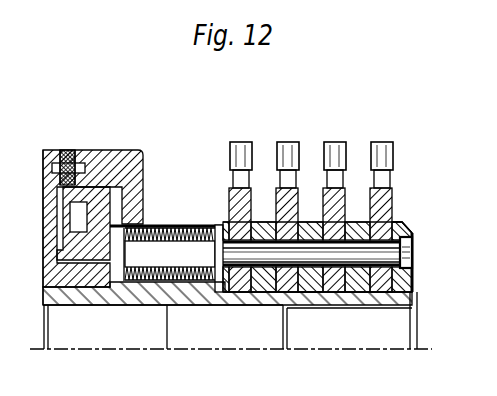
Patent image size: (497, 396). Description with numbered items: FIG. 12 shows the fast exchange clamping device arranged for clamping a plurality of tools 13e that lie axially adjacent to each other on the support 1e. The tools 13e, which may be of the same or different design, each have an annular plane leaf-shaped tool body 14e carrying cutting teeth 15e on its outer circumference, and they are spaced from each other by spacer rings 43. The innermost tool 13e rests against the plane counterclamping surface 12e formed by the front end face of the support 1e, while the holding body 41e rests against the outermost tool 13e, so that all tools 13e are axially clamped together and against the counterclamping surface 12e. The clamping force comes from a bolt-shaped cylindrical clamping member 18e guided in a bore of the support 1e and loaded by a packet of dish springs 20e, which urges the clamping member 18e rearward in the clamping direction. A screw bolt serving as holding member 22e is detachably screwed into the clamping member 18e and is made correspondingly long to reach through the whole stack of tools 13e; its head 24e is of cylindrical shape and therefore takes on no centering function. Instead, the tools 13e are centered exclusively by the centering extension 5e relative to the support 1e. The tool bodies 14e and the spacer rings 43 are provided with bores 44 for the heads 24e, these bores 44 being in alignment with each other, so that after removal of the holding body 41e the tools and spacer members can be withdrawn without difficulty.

The support 1e is at (165, 128).
The centering extension 5e is at (405, 297).
The counterclamping surface 12e is at (233, 220).
The tools 13e is at (375, 135).
The tool body 14e is at (385, 207).
The cutting teeth 15e is at (288, 142).
The clamping member 18e is at (158, 247).
The dish spring packet 20e is at (183, 228).
The holding member 22e is at (315, 295).
The head 24e is at (413, 247).
The holding body 41e is at (400, 228).
The spacer ring 43 is at (355, 228).
The bore 44 is at (377, 268).